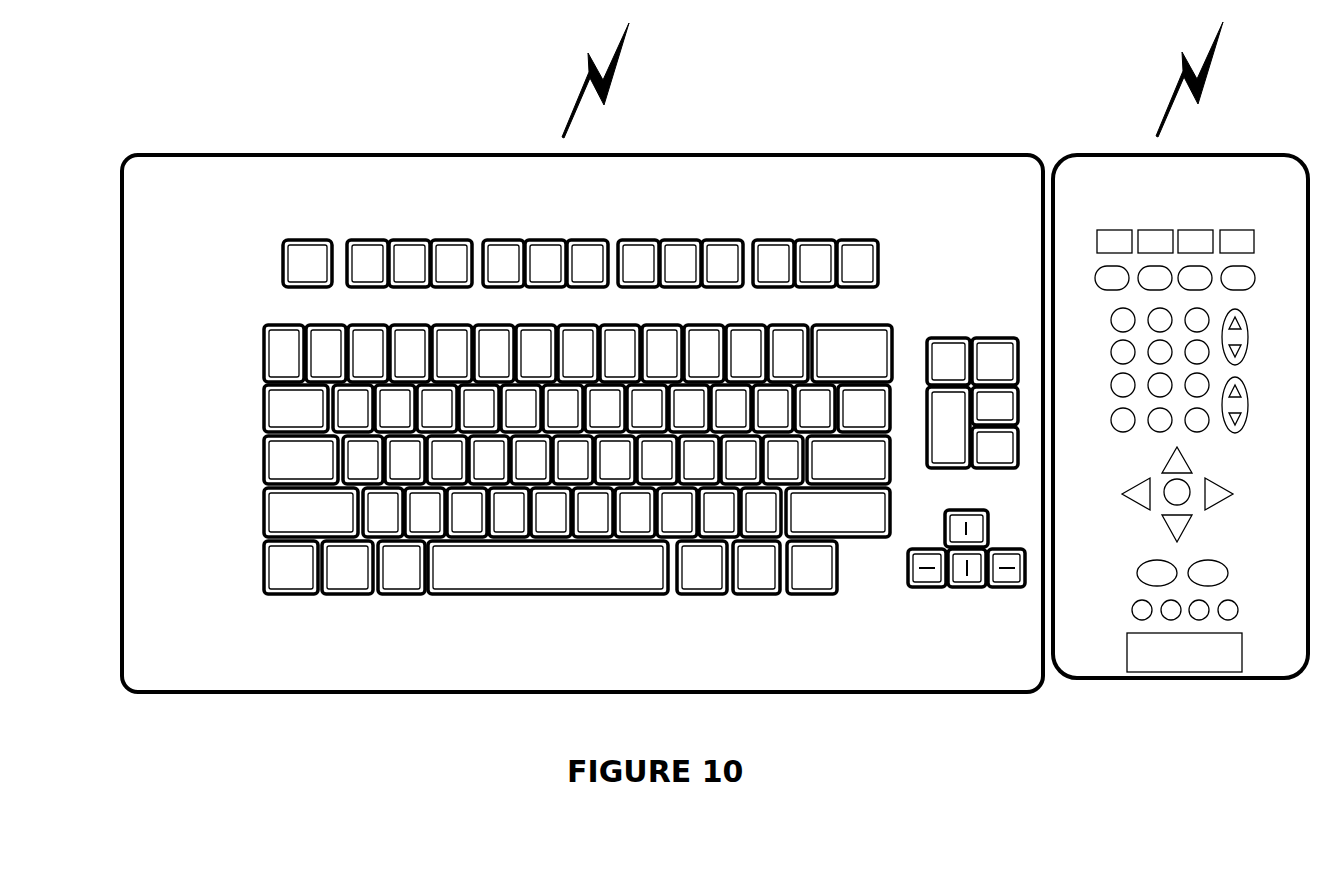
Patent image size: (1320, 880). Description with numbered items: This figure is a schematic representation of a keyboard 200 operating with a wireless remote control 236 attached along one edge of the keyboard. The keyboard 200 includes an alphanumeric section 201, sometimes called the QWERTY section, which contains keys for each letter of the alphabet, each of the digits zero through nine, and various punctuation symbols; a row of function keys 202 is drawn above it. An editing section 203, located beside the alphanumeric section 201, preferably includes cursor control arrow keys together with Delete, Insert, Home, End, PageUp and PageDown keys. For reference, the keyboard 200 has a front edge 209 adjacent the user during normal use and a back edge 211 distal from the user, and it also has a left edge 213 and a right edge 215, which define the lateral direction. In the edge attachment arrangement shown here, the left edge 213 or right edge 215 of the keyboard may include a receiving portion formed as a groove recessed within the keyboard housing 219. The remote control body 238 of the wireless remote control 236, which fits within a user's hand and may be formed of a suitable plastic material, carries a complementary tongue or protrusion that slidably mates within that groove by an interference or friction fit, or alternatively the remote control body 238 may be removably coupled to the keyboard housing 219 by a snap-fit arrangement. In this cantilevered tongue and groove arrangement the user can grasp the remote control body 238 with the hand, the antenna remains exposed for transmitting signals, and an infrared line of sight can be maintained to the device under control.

The keyboard 200 is at (811, 112).
The alphanumeric section 201 is at (255, 320).
The function key section 202 is at (350, 242).
The editing section 203 is at (930, 327).
The front edge 209 is at (843, 690).
The back edge 211 is at (916, 158).
The left edge 213 is at (121, 302).
The right edge 215 is at (1038, 285).
The keyboard housing 219 is at (387, 660).
The wireless remote control 236 is at (1202, 206).
The remote control body 238 is at (1098, 687).